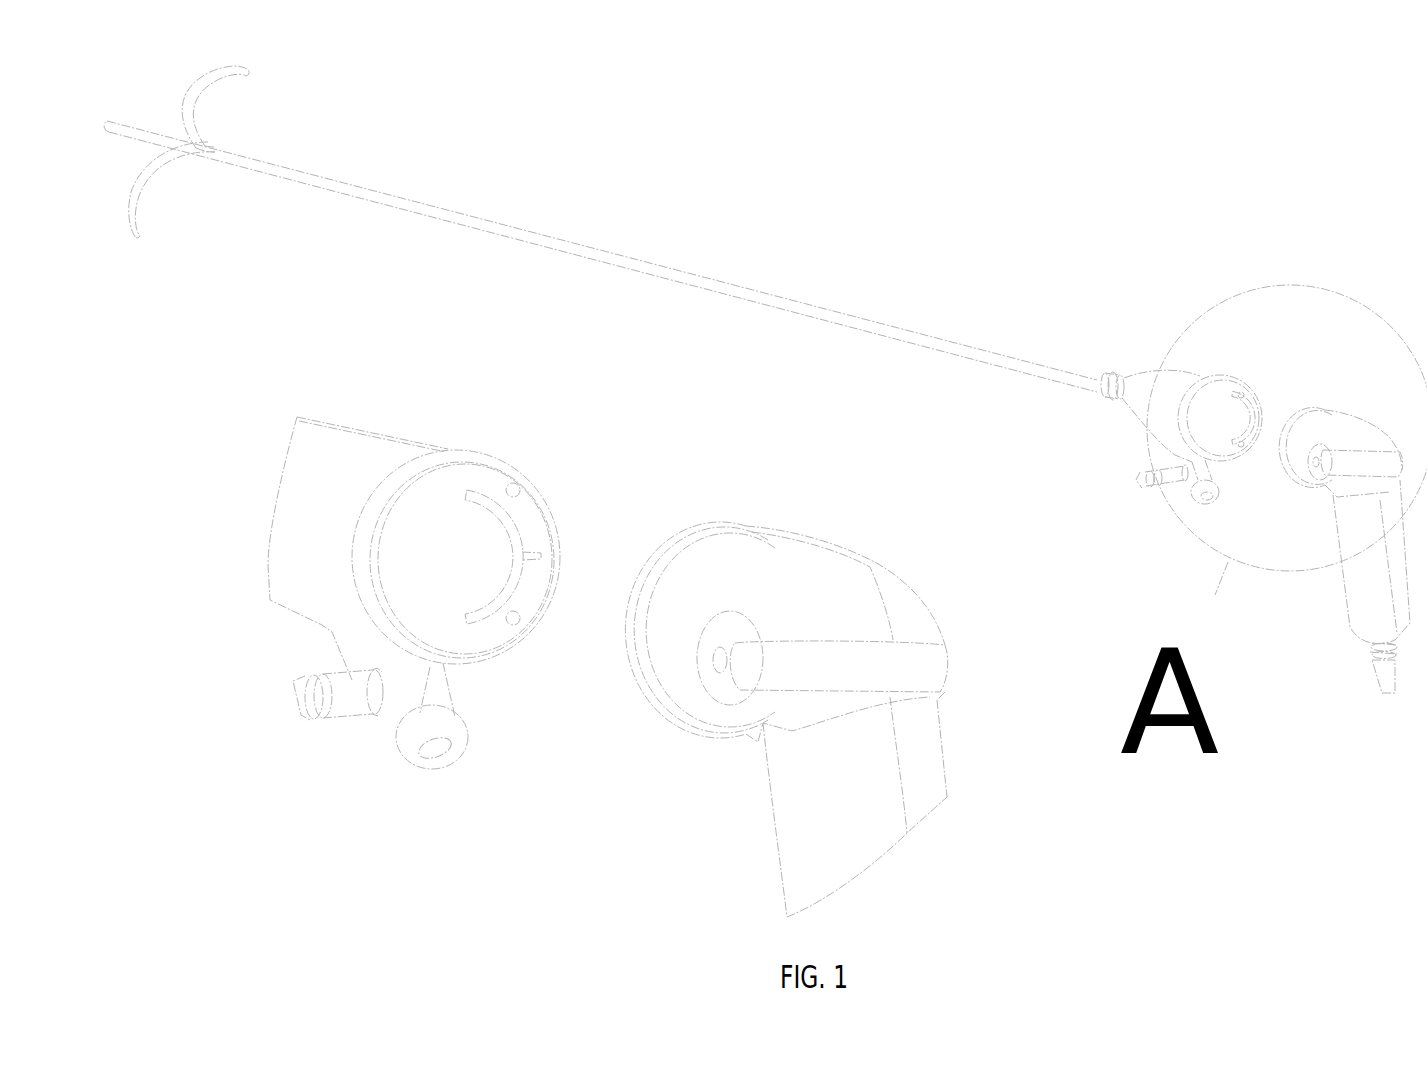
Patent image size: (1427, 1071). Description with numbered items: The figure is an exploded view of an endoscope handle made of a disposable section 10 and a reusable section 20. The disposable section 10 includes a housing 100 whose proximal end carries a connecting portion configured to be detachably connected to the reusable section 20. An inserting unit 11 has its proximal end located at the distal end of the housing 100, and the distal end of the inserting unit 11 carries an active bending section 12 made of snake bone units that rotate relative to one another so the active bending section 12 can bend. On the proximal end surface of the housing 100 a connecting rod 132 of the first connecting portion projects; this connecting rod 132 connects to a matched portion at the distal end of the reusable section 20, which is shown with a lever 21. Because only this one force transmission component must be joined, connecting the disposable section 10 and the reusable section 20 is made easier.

The disposable section 10 is at (409, 553).
The housing 100 is at (284, 598).
The inserting unit 11 is at (677, 250).
The active bending section 12 is at (168, 187).
The connecting rod 132 is at (542, 556).
The reusable section 20 is at (826, 683).
The lever 21 is at (937, 652).